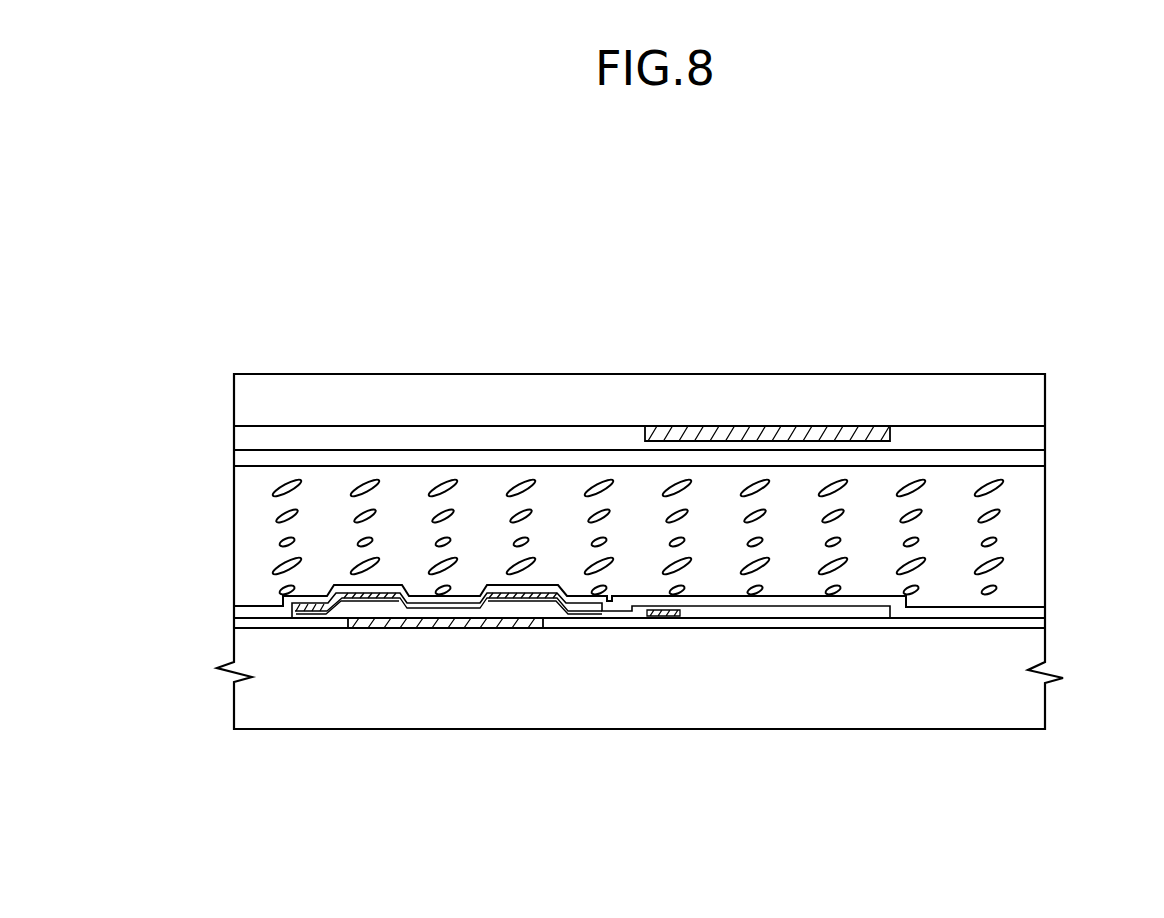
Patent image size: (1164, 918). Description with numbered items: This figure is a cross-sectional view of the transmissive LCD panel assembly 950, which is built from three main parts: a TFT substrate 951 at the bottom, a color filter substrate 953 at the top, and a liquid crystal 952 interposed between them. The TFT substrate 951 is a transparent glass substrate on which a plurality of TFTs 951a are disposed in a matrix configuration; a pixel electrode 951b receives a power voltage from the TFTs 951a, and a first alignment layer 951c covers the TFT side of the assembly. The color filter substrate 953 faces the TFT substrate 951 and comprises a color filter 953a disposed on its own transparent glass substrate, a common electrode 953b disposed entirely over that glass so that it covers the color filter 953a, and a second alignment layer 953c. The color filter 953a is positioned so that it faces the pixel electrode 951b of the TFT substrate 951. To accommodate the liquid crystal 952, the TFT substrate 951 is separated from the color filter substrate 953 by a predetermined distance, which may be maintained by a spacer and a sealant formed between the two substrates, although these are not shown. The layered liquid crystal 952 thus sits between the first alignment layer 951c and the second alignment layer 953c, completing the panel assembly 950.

The transmissive LCD panel assembly 950 is at (644, 295).
The TFT substrate 951 is at (843, 742).
The TFT 951a is at (450, 650).
The pixel electrode 951b is at (722, 618).
The first alignment layer 951c is at (1037, 615).
The liquid crystal 952 is at (1035, 537).
The color filter substrate 953 is at (1070, 436).
The color filter 953a is at (727, 428).
The common electrode 953b is at (242, 438).
The second alignment layer 953c is at (237, 458).